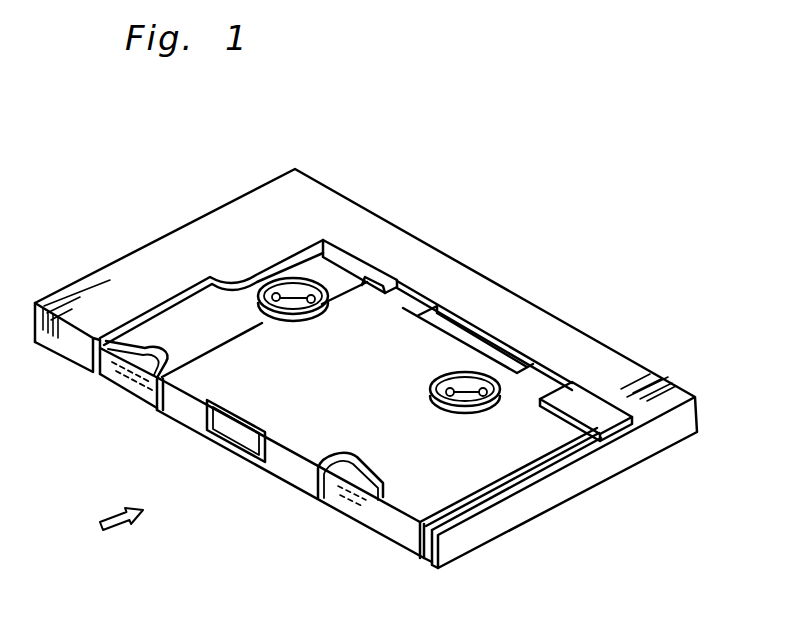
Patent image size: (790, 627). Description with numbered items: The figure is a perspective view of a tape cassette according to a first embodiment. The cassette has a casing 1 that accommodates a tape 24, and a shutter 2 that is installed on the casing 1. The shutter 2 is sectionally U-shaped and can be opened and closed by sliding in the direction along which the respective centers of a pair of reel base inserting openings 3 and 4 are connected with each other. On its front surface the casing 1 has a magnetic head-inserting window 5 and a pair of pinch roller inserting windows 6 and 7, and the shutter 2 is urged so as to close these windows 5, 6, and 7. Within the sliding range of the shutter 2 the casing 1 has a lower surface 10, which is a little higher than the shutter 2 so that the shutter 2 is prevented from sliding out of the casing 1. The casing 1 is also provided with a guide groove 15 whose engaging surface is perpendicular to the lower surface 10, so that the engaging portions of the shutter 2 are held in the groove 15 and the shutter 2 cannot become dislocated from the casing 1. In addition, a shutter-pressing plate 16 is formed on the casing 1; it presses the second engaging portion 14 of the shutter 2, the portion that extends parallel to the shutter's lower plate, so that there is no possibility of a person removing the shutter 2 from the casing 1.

The casing 1 is at (542, 328).
The shutter 2 is at (370, 322).
The reel base inserting opening 3 is at (297, 292).
The reel base inserting opening 4 is at (480, 407).
The magnetic head-inserting window 5 is at (242, 440).
The pinch roller inserting window 6 is at (140, 363).
The pinch roller inserting window 7 is at (347, 473).
The lower surface 10 is at (197, 307).
The second engaging portion 14 is at (583, 400).
The guide groove 15 is at (340, 272).
The shutter-pressing plate 16 is at (418, 312).
The tape 24 is at (143, 390).